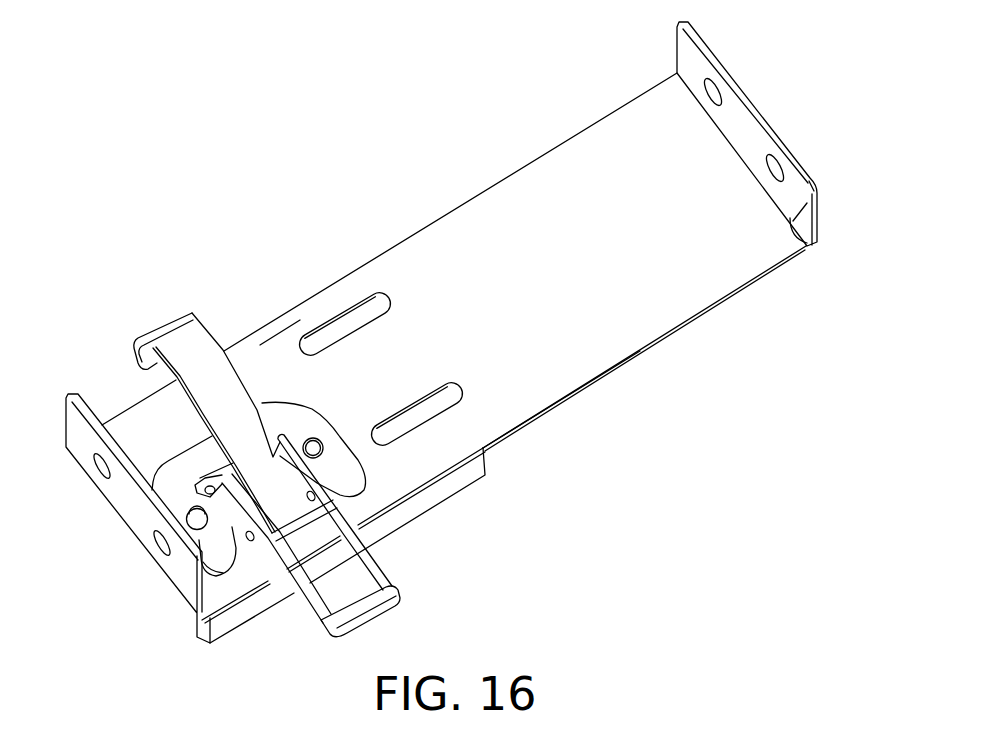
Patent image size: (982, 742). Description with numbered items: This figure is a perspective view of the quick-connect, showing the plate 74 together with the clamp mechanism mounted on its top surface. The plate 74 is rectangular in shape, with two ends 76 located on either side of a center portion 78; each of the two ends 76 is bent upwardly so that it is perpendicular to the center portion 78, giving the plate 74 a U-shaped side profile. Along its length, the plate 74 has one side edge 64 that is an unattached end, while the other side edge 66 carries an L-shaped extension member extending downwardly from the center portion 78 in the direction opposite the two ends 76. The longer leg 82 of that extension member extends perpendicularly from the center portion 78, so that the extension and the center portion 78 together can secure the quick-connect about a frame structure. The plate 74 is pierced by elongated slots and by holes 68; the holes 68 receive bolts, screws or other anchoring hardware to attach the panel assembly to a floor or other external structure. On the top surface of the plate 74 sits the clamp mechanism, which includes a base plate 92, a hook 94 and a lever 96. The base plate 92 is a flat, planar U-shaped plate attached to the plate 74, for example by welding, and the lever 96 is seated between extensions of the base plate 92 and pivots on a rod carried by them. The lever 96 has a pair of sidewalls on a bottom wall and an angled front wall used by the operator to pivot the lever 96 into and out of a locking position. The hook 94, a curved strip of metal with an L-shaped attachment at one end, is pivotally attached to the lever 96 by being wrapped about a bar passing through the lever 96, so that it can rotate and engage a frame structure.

The side edge 64 is at (366, 263).
The other side edge 66 is at (511, 433).
The holes 68 is at (775, 163).
The plate 74 is at (700, 280).
The ends 76 is at (807, 242).
The center portion 78 is at (260, 341).
The longer leg 82 is at (435, 492).
The base plate 92 is at (220, 557).
The hook 94 is at (163, 332).
The lever 96 is at (377, 615).